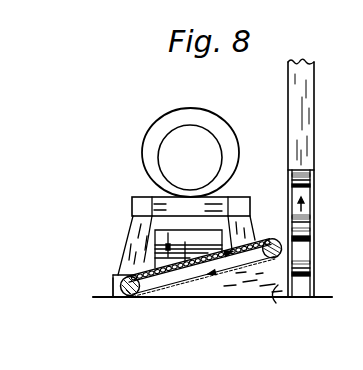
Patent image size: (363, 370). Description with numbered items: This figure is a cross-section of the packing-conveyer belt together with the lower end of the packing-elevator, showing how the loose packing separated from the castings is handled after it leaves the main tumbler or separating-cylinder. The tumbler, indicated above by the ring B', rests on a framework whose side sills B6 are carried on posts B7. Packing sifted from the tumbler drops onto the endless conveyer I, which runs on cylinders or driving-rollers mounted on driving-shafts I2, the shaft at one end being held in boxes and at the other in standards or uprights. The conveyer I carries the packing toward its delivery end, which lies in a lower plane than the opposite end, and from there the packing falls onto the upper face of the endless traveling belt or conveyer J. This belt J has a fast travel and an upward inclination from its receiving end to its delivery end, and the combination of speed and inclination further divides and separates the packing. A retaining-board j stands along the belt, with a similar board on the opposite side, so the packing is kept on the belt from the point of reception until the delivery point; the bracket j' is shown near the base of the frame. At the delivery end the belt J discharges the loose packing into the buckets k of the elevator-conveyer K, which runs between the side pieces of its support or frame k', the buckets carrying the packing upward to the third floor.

The roll B' is at (195, 150).
The side sills B6 is at (196, 207).
The posts B7 is at (125, 245).
The endless conveyer I is at (188, 249).
The driving-shafts I2 is at (124, 297).
The endless traveling belt or conveyer J is at (174, 288).
The retaining-board j is at (101, 283).
The bracket j' is at (277, 303).
The guide column k' is at (312, 178).
The elevator-conveyer K is at (303, 254).
The buckets k is at (312, 224).